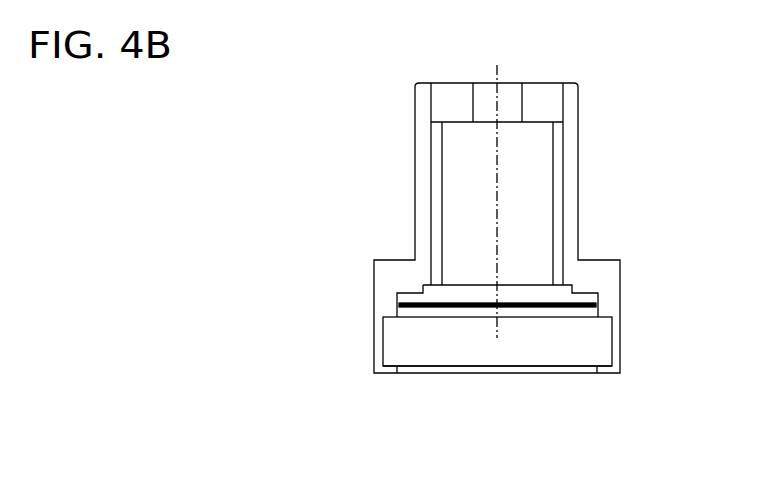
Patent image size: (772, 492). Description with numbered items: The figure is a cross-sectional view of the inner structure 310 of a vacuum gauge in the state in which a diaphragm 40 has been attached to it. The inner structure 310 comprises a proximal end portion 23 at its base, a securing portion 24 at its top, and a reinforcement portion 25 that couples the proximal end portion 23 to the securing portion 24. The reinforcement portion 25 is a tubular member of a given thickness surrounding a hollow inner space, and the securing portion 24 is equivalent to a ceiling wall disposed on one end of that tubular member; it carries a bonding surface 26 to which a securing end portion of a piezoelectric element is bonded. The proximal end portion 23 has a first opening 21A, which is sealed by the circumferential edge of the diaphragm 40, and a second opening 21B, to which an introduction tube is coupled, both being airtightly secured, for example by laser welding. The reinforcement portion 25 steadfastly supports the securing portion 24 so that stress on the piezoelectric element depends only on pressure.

The inner structure 310 is at (625, 73).
The securing portion 24 is at (447, 95).
The bonding surface 26 is at (513, 95).
The reinforcement portion 25 is at (426, 152).
The proximal end portion 23 is at (423, 275).
The diaphragm 40 is at (466, 310).
The first opening 21A is at (523, 313).
The second opening 21B is at (468, 368).